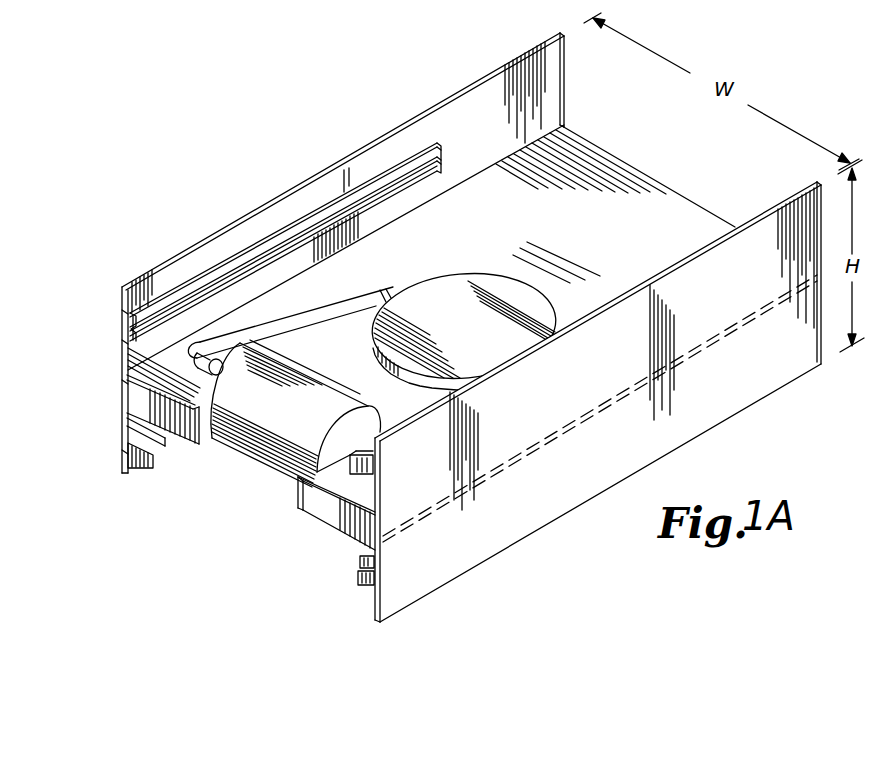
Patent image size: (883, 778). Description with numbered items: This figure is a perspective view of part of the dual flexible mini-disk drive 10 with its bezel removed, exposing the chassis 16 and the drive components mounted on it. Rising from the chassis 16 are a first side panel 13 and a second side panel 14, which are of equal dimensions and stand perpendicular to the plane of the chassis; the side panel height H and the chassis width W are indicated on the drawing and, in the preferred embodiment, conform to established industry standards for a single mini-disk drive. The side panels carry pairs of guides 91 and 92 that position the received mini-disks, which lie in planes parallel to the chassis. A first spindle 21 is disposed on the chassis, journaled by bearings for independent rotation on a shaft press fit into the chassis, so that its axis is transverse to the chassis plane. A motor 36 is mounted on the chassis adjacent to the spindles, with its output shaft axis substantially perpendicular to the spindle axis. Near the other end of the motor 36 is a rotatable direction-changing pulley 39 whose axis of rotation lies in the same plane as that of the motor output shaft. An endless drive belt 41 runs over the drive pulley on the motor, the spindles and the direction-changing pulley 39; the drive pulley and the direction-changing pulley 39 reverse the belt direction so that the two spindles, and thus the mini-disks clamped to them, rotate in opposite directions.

The dual flexible mini-disk drive 10 is at (381, 128).
The first side panel 13 is at (758, 394).
The second side panel 14 is at (122, 462).
The chassis 16 is at (350, 527).
The first spindle 21 is at (553, 306).
The motor 36 is at (268, 455).
The direction-changing pulley 39 is at (204, 346).
The endless drive belt 41 is at (298, 326).
The guides 91 is at (125, 333).
The guides 92 is at (125, 435).